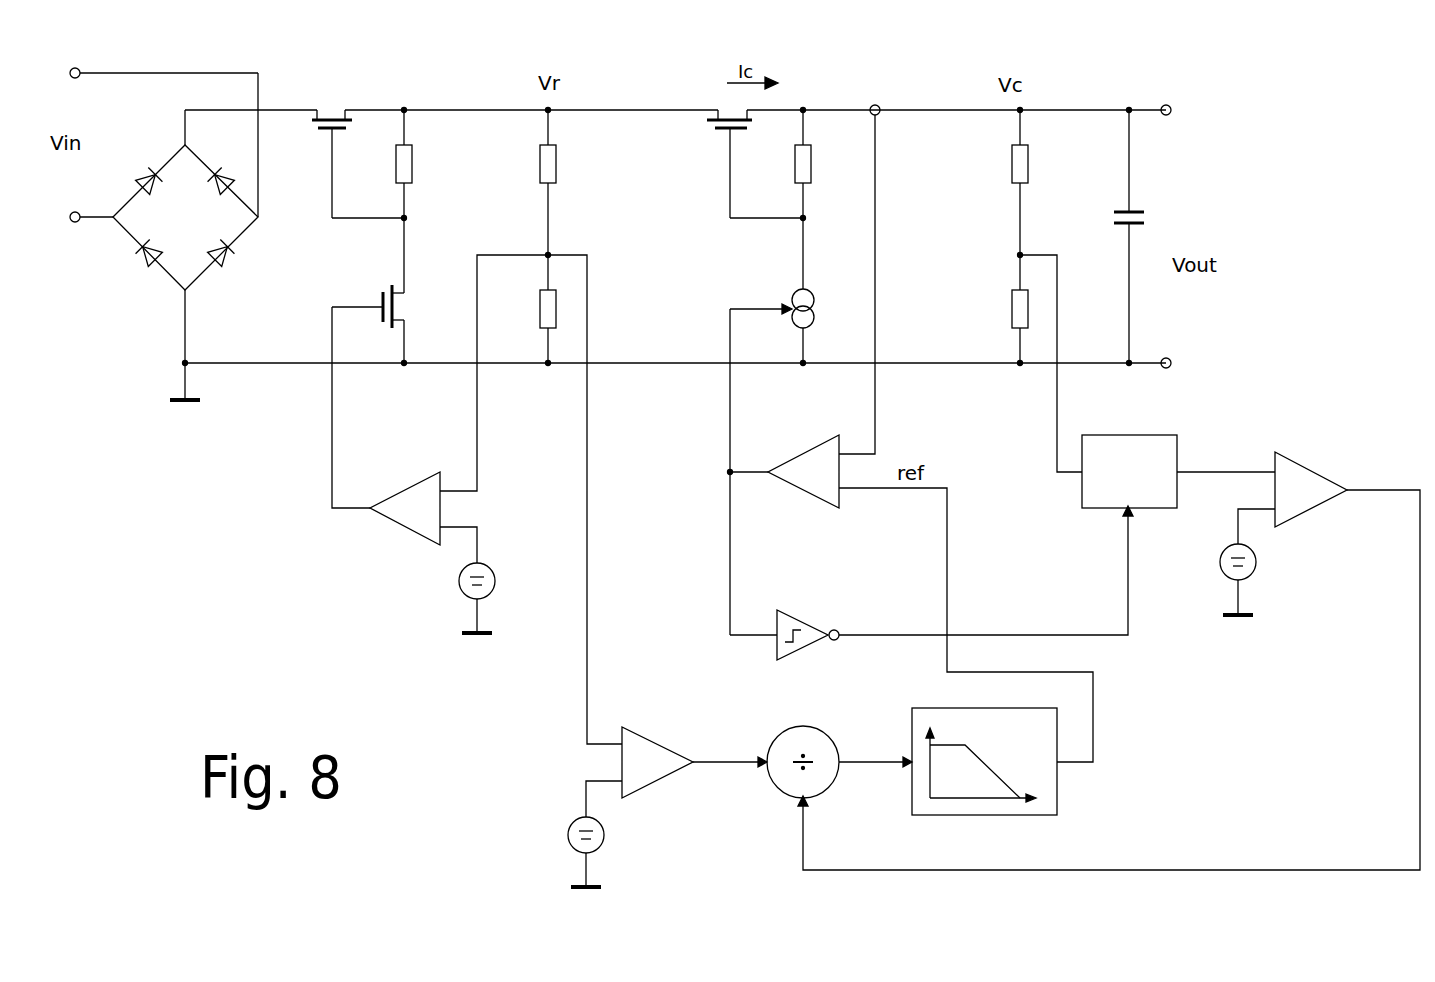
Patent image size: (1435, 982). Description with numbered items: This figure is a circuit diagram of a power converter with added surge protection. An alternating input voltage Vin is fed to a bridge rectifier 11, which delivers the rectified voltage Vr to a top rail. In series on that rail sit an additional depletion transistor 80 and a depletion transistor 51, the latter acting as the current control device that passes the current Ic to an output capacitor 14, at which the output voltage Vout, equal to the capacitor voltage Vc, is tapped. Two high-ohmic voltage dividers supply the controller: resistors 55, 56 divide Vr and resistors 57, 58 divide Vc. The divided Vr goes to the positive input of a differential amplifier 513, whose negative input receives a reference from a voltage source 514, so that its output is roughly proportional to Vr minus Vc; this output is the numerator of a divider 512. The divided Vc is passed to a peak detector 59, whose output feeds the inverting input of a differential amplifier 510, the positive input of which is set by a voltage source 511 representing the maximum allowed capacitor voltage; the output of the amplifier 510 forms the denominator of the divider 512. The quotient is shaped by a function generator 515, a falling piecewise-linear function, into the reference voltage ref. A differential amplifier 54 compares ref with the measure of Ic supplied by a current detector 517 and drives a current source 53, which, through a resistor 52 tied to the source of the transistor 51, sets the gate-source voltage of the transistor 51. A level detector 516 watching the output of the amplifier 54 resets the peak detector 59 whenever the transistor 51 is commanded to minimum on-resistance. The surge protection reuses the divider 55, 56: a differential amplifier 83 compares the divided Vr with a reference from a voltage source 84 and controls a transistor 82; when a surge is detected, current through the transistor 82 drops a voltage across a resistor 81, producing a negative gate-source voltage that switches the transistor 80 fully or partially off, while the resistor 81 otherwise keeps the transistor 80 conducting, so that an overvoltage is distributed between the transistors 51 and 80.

The rectifier 11 is at (112, 298).
The depletion transistor 80 is at (322, 120).
The resistor 81 is at (414, 171).
The transistor 82 is at (396, 298).
The differential amplifier 83 is at (388, 494).
The voltage source 84 is at (490, 569).
The resistor 55 is at (558, 165).
The resistor 56 is at (541, 312).
The depletion transistor 51 is at (718, 116).
The resistor 52 is at (807, 157).
The current source 53 is at (811, 291).
The differential amplifier 54 is at (790, 452).
The level detector 516 is at (804, 618).
The current detector 517 is at (882, 103).
The resistor 57 is at (1028, 172).
The resistor 58 is at (1010, 309).
The output capacitor 14 is at (1140, 201).
The peak detector 59 is at (1143, 429).
The differential amplifier 510 is at (1276, 448).
The voltage source 511 is at (1254, 567).
The divider 512 is at (804, 716).
The differential amplifier 513 is at (655, 736).
The voltage source 514 is at (603, 835).
The function generator 515 is at (1057, 805).